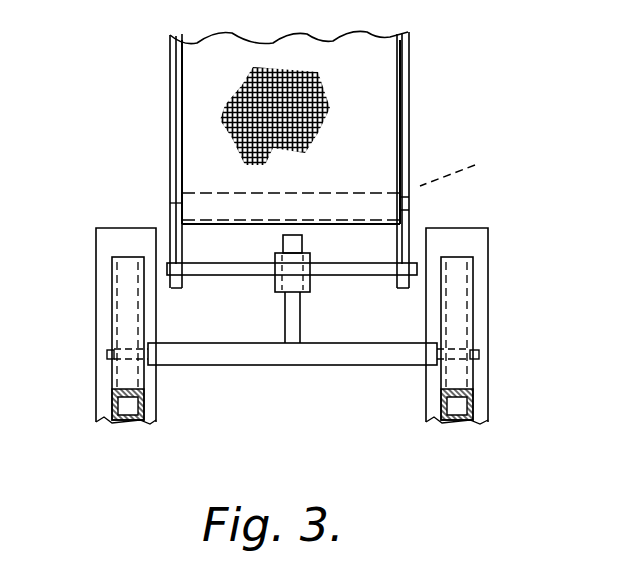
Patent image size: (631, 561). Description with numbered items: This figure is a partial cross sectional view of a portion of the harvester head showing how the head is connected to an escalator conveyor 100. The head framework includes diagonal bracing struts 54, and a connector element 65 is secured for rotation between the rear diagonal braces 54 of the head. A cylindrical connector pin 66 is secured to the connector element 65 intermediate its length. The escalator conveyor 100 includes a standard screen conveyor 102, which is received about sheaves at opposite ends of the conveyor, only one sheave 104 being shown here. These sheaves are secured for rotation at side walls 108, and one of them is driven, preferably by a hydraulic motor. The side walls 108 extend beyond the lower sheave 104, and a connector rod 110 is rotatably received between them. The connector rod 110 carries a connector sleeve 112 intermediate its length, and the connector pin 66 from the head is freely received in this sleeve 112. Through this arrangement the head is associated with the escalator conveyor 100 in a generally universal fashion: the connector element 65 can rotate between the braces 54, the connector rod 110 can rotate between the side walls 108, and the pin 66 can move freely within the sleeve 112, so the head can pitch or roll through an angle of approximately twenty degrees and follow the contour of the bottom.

The escalator conveyor 100 is at (428, 71).
The screen conveyor 102 is at (384, 138).
The sheave 104 is at (465, 169).
The side wall 108 is at (410, 218).
The connector rod 110 is at (347, 273).
The connector sleeve 112 is at (311, 258).
The connector pin 66 is at (292, 312).
The connector element 65 is at (347, 362).
The diagonal bracing strut 54 is at (112, 317).